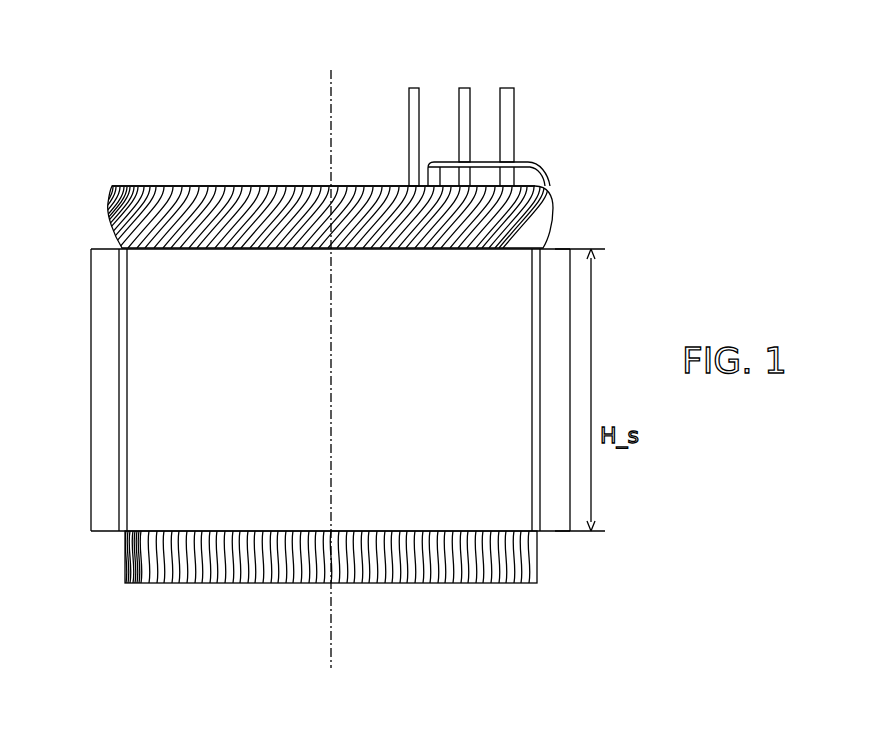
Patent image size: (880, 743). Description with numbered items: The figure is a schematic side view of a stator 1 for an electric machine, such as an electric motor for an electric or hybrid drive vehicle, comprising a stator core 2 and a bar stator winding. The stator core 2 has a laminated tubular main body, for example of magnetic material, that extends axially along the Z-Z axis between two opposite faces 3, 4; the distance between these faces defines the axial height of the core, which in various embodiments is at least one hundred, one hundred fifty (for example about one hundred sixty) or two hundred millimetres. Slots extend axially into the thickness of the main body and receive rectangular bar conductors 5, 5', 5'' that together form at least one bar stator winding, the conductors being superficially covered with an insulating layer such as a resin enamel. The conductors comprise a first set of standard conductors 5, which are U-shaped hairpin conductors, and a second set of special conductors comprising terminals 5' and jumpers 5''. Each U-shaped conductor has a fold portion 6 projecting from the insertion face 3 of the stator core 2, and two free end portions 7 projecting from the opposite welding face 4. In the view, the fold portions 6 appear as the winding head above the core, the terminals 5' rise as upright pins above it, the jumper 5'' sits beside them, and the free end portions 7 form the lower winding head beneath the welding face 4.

The stator 1 is at (107, 124).
The stator core 2 is at (91, 367).
The insertion face 3 is at (98, 248).
The welding face 4 is at (108, 532).
The standard conductors 5 is at (361, 393).
The terminals 5' is at (462, 96).
The jumpers 5'' is at (516, 129).
The fold portion 6 is at (245, 186).
The free end portions 7 is at (195, 583).